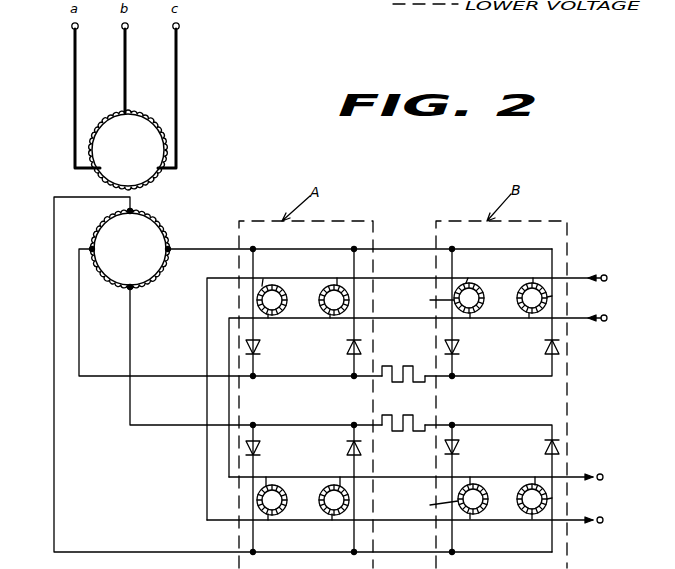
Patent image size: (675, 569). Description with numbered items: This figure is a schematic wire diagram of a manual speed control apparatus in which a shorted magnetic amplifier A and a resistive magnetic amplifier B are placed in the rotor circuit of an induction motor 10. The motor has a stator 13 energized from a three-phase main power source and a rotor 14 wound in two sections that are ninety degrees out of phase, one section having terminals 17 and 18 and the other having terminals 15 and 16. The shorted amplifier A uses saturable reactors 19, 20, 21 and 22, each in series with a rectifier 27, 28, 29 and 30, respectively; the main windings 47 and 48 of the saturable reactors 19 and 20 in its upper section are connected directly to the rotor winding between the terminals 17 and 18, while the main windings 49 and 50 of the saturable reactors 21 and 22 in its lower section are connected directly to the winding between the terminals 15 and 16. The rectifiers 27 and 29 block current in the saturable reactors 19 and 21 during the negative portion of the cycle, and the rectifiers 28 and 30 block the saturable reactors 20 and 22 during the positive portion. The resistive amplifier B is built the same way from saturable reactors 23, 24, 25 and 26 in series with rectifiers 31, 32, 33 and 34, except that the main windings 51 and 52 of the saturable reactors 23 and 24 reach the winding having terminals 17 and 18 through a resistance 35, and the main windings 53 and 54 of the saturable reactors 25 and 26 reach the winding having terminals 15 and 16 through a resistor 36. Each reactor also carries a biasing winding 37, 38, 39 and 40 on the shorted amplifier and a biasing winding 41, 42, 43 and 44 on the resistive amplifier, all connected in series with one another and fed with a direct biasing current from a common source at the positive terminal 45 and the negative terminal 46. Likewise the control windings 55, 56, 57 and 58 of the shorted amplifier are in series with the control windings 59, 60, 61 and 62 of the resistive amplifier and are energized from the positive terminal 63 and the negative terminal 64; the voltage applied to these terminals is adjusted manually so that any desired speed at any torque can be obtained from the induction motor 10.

The induction motor 10 is at (99, 109).
The stator 13 is at (149, 106).
The rotor 14 is at (176, 226).
The terminal 15 is at (134, 210).
The terminal 16 is at (134, 290).
The terminal 17 is at (172, 248).
The terminal 18 is at (89, 248).
The saturable reactor 19 is at (285, 297).
The saturable reactor 20 is at (319, 305).
The saturable reactor 21 is at (286, 497).
The saturable reactor 22 is at (319, 505).
The saturable reactor 23 is at (486, 295).
The saturable reactor 24 is at (517, 304).
The saturable reactor 25 is at (489, 496).
The saturable reactor 26 is at (518, 505).
The rectifier 27 is at (262, 352).
The rectifier 28 is at (345, 352).
The rectifier 29 is at (262, 448).
The rectifier 30 is at (345, 450).
The rectifier 31 is at (461, 352).
The rectifier 32 is at (544, 352).
The rectifier 33 is at (461, 447).
The rectifier 34 is at (543, 449).
The resistance 35 is at (413, 365).
The resistor 36 is at (414, 414).
The biasing winding 37 is at (269, 315).
The biasing winding 38 is at (330, 316).
The biasing winding 39 is at (268, 486).
The biasing winding 40 is at (341, 486).
The biasing winding 41 is at (470, 314).
The biasing winding 42 is at (530, 315).
The biasing winding 43 is at (471, 485).
The biasing winding 44 is at (536, 485).
The positive terminal 45 is at (613, 328).
The negative terminal 46 is at (605, 466).
The main winding 47 is at (257, 300).
The main winding 48 is at (366, 298).
The main winding 49 is at (257, 501).
The main winding 50 is at (350, 501).
The main winding 51 is at (454, 297).
The main winding 52 is at (548, 296).
The main winding 53 is at (458, 501).
The main winding 54 is at (548, 498).
The control winding 55 is at (264, 286).
The control winding 56 is at (337, 285).
The control winding 57 is at (269, 516).
The control winding 58 is at (333, 516).
The control winding 59 is at (468, 283).
The control winding 60 is at (533, 283).
The control winding 61 is at (471, 515).
The control winding 62 is at (533, 515).
The positive terminal 63 is at (618, 264).
The negative terminal 64 is at (612, 532).